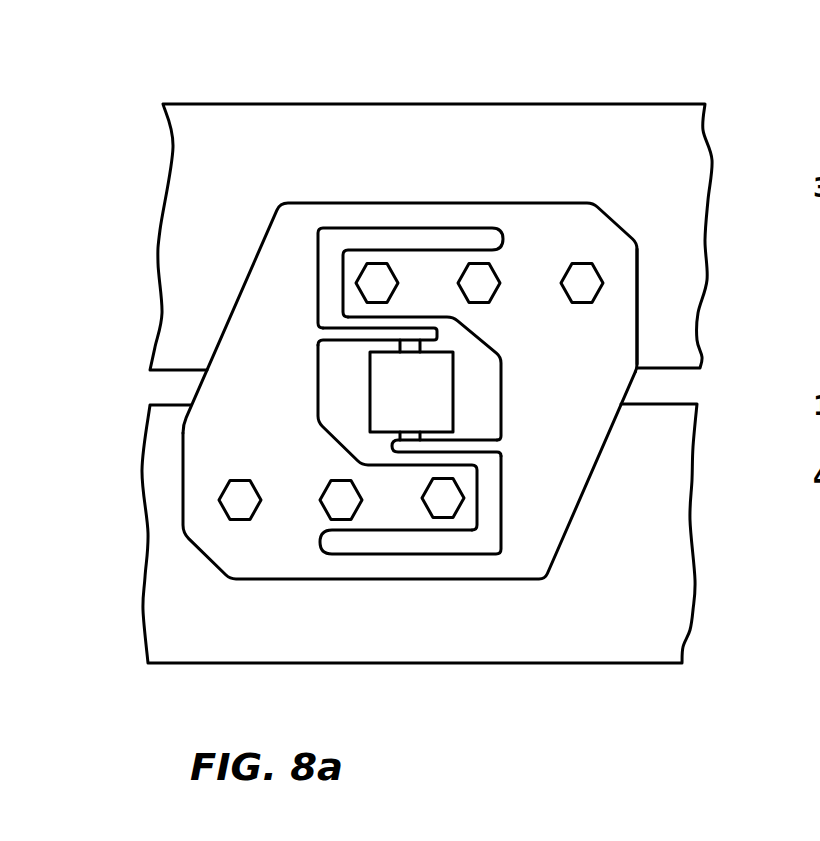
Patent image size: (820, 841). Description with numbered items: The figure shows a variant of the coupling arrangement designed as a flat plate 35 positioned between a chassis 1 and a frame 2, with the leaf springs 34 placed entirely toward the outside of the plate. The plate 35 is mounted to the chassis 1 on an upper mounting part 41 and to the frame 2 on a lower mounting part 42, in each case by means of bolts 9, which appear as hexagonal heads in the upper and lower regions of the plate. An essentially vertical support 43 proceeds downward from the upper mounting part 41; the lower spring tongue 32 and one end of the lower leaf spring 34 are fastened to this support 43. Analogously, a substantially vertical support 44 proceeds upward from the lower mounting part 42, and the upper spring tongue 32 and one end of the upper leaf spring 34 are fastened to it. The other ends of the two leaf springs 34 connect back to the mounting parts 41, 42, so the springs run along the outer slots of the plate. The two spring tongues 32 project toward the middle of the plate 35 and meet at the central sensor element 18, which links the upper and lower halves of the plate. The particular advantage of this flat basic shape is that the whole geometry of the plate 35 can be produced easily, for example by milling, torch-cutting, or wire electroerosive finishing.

The chassis 1 is at (658, 650).
The frame 2 is at (683, 122).
The bolts 9 is at (587, 287).
The force sensor 18 is at (408, 407).
The spring tongue 32 is at (379, 333).
The leaf spring 34 is at (430, 217).
The flat plate 35 is at (637, 322).
The upper mounting part 41 is at (542, 280).
The lower mounting part 42 is at (300, 502).
The vertical support 43 is at (563, 437).
The vertical support 44 is at (258, 337).